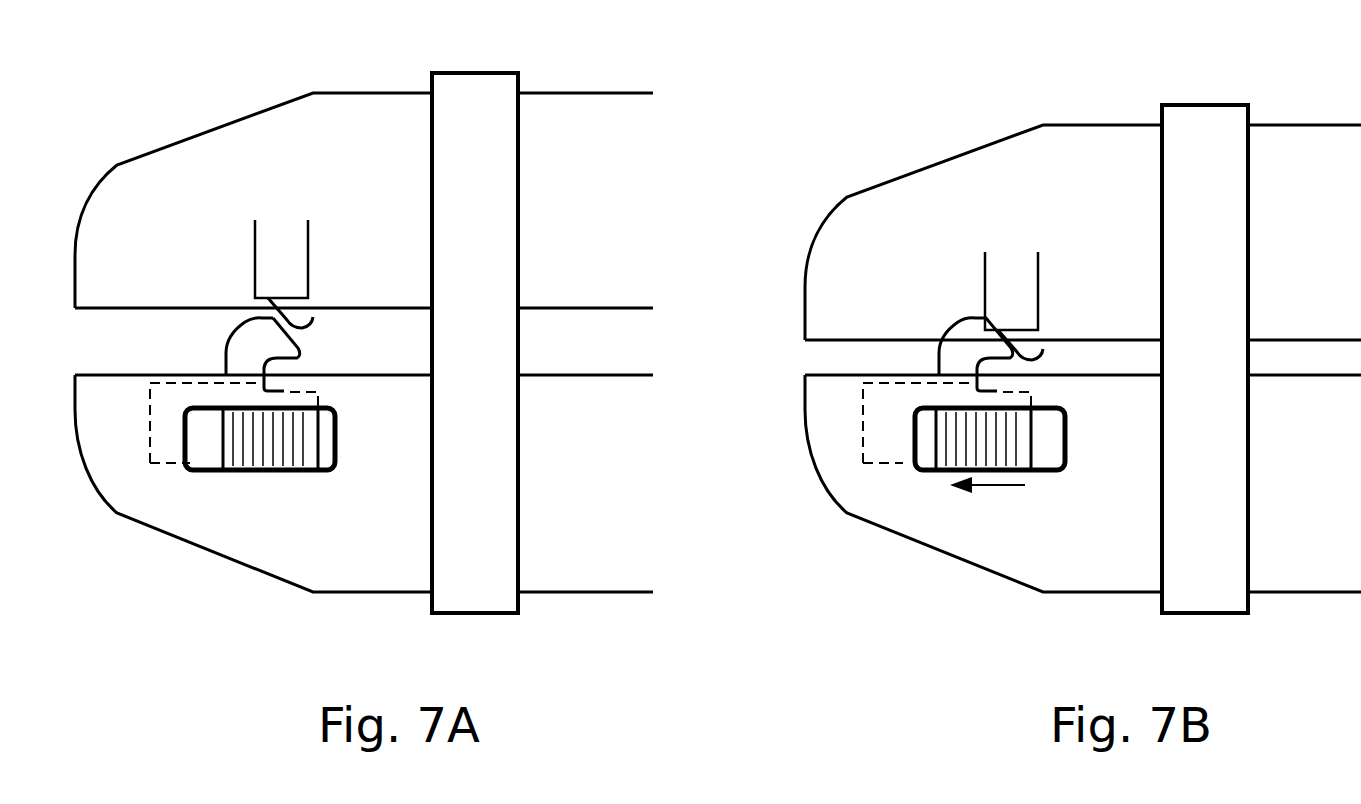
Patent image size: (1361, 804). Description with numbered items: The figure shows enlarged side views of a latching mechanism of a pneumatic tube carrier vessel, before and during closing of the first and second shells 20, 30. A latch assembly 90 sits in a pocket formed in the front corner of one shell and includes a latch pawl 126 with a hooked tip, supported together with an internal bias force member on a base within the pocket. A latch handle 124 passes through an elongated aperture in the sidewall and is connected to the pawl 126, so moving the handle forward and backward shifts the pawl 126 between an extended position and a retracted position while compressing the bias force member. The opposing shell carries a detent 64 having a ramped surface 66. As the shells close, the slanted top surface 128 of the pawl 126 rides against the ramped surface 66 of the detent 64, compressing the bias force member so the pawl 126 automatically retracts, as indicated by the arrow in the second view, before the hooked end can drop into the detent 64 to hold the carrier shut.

In FIG. 7A, the first shell 20 is at (394, 147).
In FIG. 7B, the first shell 20 is at (1126, 179).
In FIG. 7A, the second shell 30 is at (379, 588).
In FIG. 7B, the second shell 30 is at (1124, 588).
In FIG. 7A, the detent 64 is at (278, 308).
In FIG. 7B, the detent 64 is at (1018, 328).
In FIG. 7A, the ramped surface 66 is at (295, 318).
In FIG. 7A, the latch assembly 90 is at (178, 363).
In FIG. 7A, the latch handle 124 is at (295, 447).
In FIG. 7B, the latch handle 124 is at (993, 440).
In FIG. 7A, the latch pawl 126 is at (281, 351).
In FIG. 7B, the latch pawl 126 is at (965, 353).
In FIG. 7A, the top surface of the pawl 128 is at (300, 343).